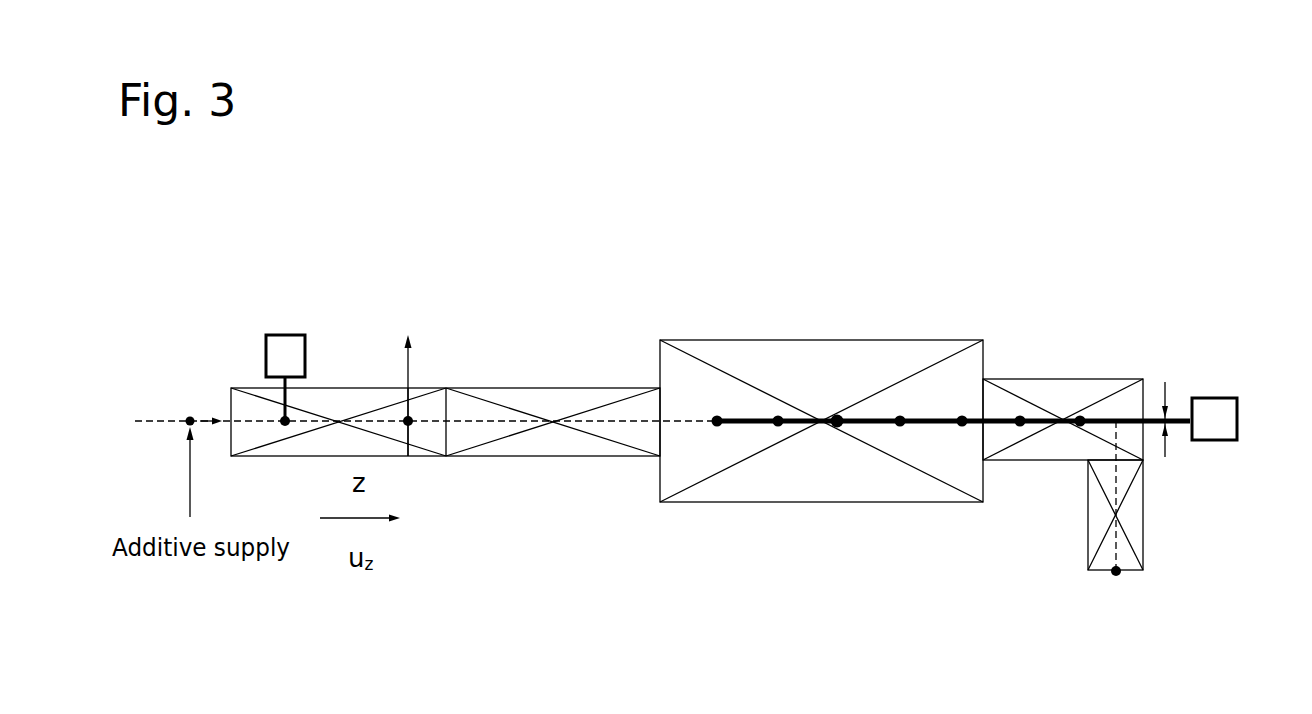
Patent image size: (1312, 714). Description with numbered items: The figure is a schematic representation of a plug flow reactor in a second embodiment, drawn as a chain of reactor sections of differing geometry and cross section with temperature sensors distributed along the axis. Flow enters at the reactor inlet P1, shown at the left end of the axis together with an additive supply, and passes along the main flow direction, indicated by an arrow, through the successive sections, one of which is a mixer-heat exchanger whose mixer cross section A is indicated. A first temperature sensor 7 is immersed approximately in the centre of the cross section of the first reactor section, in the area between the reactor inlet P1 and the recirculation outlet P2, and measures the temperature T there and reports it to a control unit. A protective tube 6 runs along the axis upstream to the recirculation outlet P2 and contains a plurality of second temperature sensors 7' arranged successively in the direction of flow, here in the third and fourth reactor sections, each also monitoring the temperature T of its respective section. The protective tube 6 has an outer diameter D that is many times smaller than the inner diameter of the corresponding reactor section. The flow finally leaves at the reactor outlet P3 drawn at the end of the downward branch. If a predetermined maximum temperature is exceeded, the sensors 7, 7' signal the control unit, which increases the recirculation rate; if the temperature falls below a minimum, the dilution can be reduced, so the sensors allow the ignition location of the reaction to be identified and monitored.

The protective tube 6 is at (837, 421).
The first temperature sensor 7 is at (261, 327).
The second temperature sensor 7' is at (1244, 482).
The temperature T is at (285, 421).
The reactor inlet P1 is at (166, 445).
The recirculation outlet P2 is at (436, 395).
The reactor outlet P3 is at (1132, 520).
The outer diameter D is at (1178, 431).
The mixer cross section A is at (553, 454).